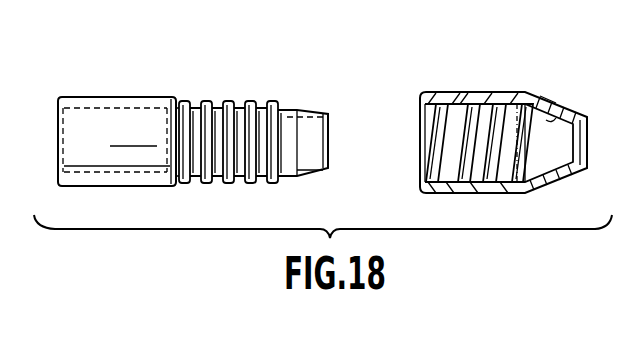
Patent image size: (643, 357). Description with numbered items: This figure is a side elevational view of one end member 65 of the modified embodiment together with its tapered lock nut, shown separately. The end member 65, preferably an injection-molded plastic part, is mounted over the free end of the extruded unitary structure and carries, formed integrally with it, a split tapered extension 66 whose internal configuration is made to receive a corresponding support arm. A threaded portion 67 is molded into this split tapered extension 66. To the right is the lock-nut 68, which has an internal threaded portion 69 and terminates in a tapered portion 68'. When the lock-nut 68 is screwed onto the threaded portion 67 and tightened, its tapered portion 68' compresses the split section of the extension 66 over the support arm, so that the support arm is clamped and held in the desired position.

The end member 65 is at (148, 83).
The split tapered extension 66 is at (293, 111).
The threaded portion 67 is at (208, 103).
The lock-nut 68 is at (503, 120).
The tapered portion 68' is at (566, 94).
The internal threaded portion 69 is at (433, 112).